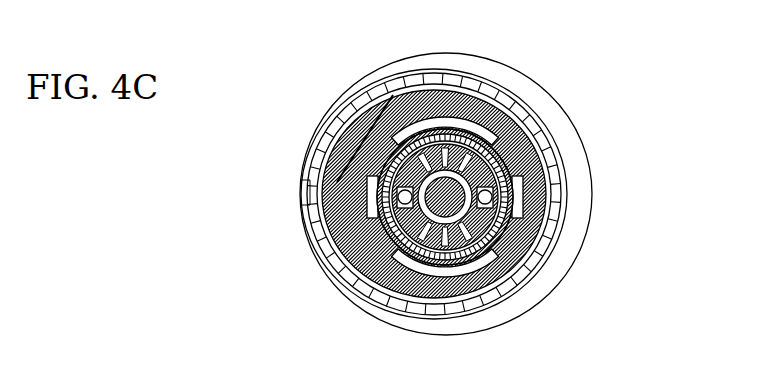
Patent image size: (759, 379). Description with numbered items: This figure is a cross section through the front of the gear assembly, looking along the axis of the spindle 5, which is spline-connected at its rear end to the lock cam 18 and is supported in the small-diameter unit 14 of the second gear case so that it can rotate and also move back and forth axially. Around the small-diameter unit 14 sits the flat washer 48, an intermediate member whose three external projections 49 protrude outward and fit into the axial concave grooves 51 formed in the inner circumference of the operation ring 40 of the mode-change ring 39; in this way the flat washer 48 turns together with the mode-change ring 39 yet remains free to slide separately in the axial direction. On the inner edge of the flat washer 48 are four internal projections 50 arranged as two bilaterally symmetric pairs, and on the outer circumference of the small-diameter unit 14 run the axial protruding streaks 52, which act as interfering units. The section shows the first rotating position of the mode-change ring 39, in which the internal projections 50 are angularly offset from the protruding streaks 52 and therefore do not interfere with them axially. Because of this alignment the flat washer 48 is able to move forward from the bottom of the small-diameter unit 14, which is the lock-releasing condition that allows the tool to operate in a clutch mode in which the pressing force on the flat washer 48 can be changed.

The spindle 5 is at (540, 153).
The small-diameter unit 14 is at (535, 98).
The lock cam 18 is at (555, 244).
The mode-change ring 39 is at (568, 107).
The operation ring 40 is at (522, 75).
The flat washer 48 is at (400, 118).
The external projections 49 is at (495, 83).
The internal projections 50 is at (347, 100).
The concave grooves 51 is at (515, 80).
The protruding streaks 52 is at (445, 122).